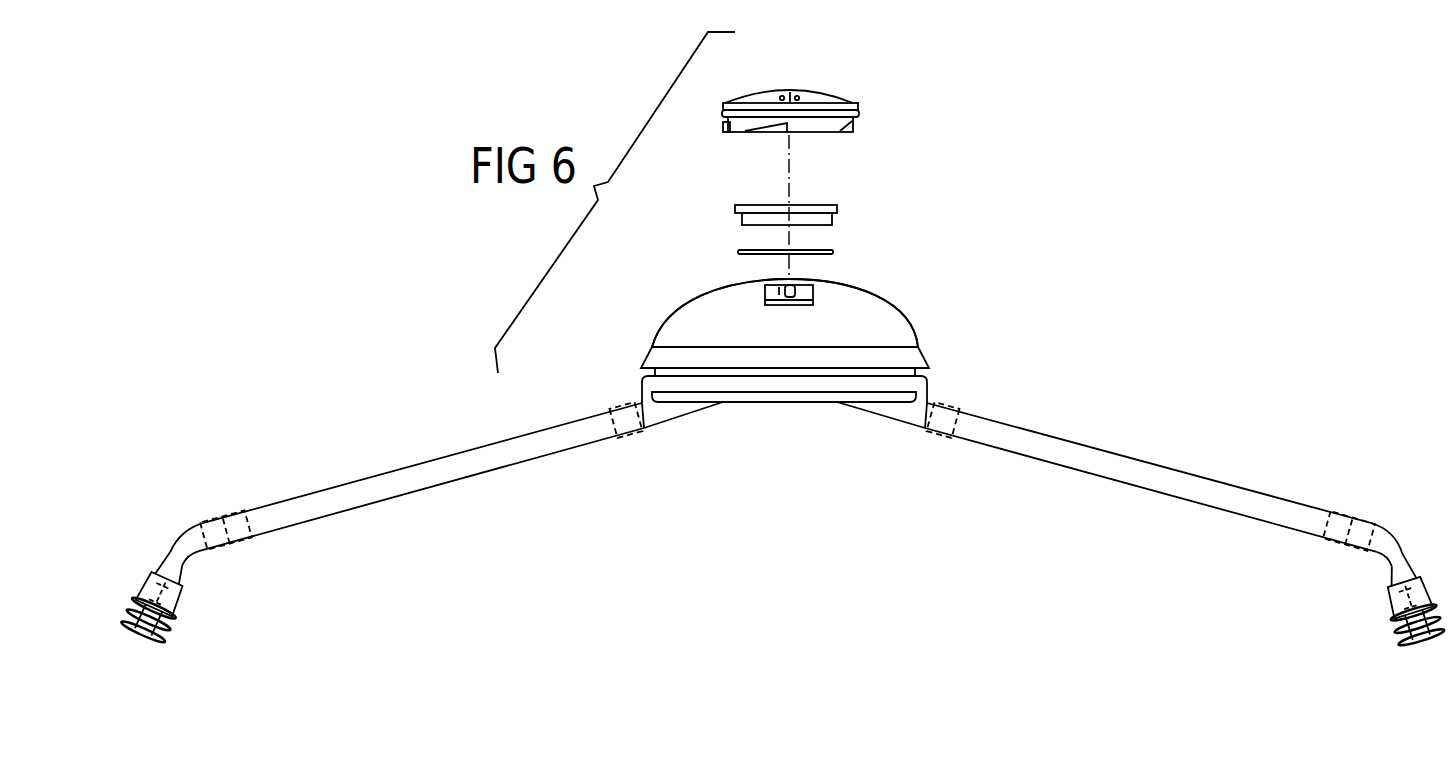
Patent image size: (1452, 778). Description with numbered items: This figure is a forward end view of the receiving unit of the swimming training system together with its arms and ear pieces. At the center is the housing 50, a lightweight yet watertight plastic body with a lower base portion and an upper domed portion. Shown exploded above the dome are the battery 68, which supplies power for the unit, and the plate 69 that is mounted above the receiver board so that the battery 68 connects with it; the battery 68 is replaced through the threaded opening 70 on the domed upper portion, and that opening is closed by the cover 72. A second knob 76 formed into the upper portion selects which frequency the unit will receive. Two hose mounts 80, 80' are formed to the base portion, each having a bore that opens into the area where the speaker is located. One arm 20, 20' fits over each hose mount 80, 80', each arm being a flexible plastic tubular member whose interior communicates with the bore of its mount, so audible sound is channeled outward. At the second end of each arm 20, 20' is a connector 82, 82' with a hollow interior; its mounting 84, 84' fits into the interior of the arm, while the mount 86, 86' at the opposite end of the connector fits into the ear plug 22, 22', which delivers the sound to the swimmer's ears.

The arm 20 is at (1170, 494).
The arm 20' is at (399, 490).
The ear plug 22 is at (1417, 561).
The ear plug 22' is at (200, 608).
The housing 50 is at (909, 319).
The battery 68 is at (840, 210).
The plate 69 is at (746, 251).
The threaded opening 70 is at (840, 283).
The cover 72 is at (857, 104).
The second knob 76 is at (768, 297).
The hose mount 80 is at (914, 439).
The hose mount 80' is at (660, 431).
The connector 82 is at (1372, 508).
The connector 82' is at (220, 497).
The mounting 84 is at (1331, 509).
The mounting 84' is at (264, 500).
The mount 86 is at (1368, 615).
The mount 86' is at (172, 531).